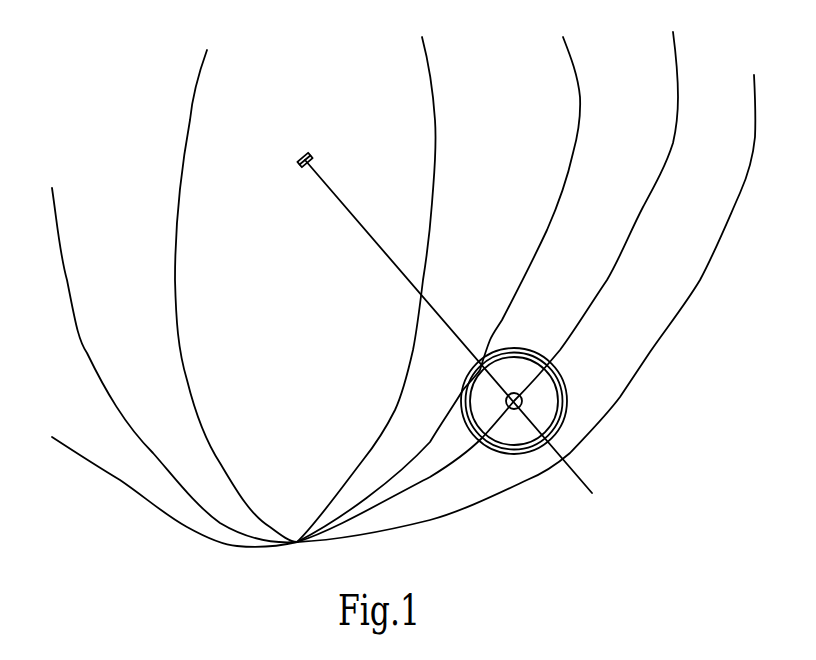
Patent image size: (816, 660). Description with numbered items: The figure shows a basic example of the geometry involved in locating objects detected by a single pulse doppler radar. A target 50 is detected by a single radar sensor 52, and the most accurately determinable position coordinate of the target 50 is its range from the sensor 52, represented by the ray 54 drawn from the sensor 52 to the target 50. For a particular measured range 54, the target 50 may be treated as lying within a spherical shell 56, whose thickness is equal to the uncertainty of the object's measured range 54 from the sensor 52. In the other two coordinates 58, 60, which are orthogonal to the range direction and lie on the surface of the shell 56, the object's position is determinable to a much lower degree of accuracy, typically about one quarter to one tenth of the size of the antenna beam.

The target 50 is at (585, 402).
The radar sensor 52 is at (312, 160).
The ray 54 is at (438, 302).
The spherical shell 56 is at (563, 380).
The coordinate orthogonal to range direction 58 is at (560, 392).
The coordinate orthogonal to range direction 60 is at (535, 430).